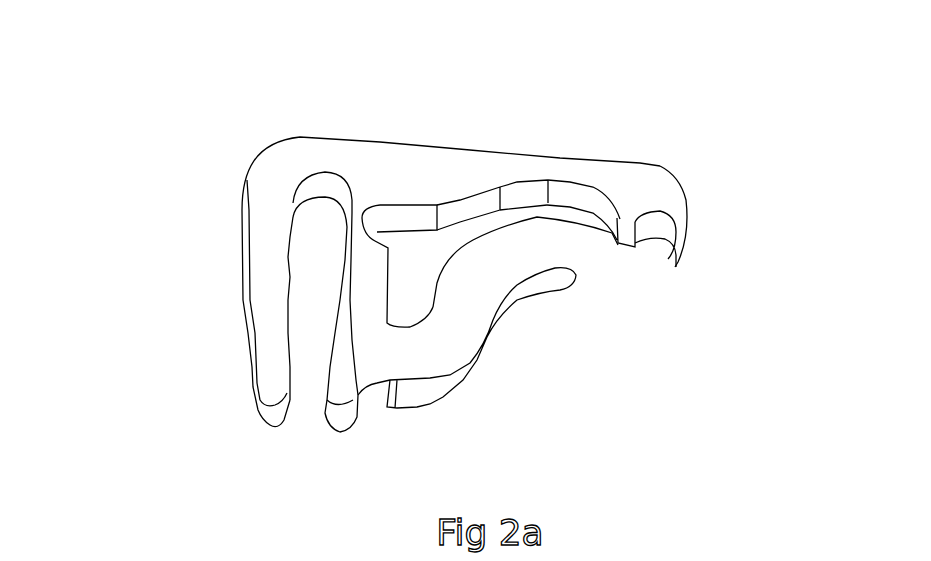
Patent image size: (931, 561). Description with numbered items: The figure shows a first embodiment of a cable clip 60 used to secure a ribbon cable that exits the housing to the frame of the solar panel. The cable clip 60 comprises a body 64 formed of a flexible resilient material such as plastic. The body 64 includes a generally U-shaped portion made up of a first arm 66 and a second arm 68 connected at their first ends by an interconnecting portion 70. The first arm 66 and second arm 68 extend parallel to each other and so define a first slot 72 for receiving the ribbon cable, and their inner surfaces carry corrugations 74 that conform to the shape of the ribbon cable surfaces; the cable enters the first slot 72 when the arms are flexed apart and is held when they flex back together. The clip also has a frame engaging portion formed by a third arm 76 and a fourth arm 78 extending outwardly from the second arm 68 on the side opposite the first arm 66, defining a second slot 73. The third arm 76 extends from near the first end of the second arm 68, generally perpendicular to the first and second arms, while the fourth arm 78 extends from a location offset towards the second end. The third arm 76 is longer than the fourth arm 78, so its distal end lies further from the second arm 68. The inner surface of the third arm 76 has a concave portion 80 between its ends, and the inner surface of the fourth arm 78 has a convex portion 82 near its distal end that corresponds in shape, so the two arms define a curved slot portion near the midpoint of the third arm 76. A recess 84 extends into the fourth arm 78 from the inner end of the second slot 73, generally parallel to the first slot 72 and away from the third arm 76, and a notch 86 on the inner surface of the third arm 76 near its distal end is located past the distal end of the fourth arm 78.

The cable clip 60 is at (203, 137).
The body 64 is at (305, 145).
The first arm 66 is at (275, 335).
The second arm 68 is at (358, 320).
The interconnecting portion 70 is at (333, 162).
The first slot 72 is at (312, 363).
The second slot 73 is at (595, 237).
The corrugations 74 is at (290, 283).
The third arm 76 is at (628, 180).
The fourth arm 78 is at (523, 263).
The concave portion 80 is at (562, 200).
The convex portion 82 is at (512, 225).
The recess 84 is at (417, 307).
The notch 86 is at (652, 247).